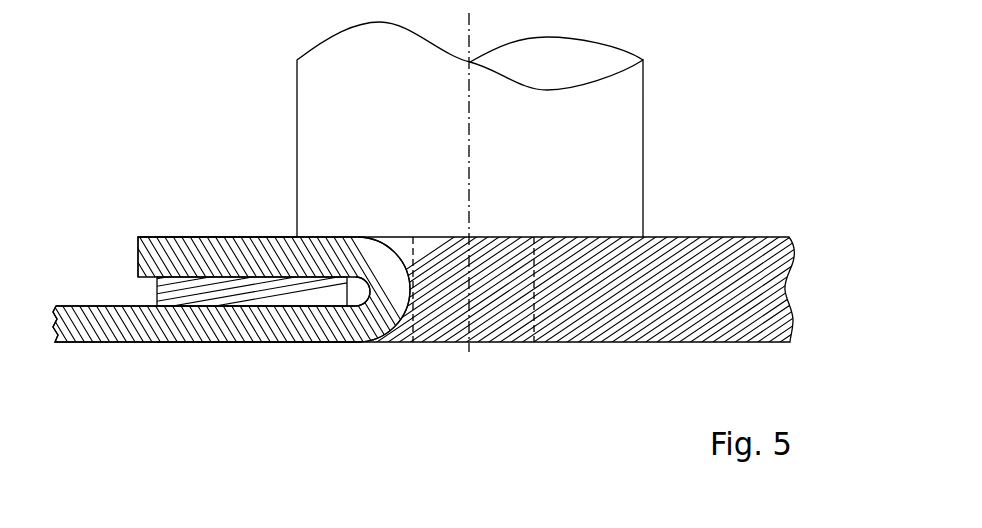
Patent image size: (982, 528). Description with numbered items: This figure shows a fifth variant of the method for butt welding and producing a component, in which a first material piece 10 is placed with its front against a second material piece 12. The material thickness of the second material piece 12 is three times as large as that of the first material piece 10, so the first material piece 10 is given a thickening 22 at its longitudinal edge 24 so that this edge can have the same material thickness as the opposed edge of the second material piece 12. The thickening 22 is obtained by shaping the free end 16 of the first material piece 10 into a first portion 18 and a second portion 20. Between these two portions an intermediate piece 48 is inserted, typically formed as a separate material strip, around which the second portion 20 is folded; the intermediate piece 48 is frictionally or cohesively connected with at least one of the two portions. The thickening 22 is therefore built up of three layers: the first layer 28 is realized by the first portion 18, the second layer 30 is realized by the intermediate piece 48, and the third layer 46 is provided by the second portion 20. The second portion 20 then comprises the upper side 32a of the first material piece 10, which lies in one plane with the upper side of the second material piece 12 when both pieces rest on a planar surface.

The first material piece 10 is at (72, 316).
The second material piece 12 is at (605, 327).
The free end 16 is at (163, 362).
The first portion 18 is at (258, 330).
The second portion 20 is at (218, 255).
The thickening 22 is at (296, 388).
The longitudinal edge 24 is at (398, 226).
The first layer 28 is at (205, 330).
The second layer 30 is at (162, 292).
The upper side 32a is at (187, 230).
The third layer 46 is at (270, 250).
The intermediate piece 48 is at (346, 303).